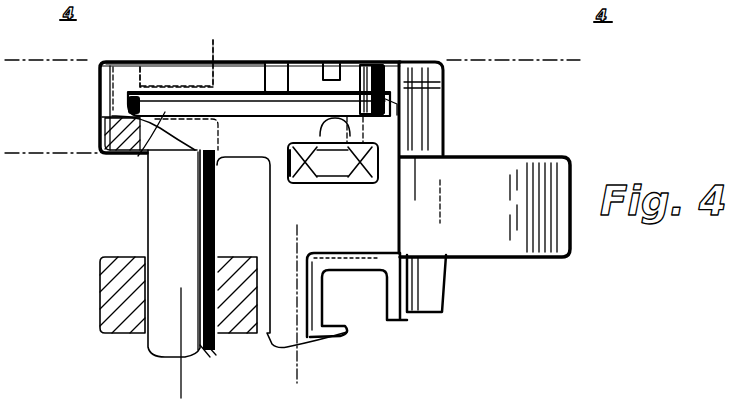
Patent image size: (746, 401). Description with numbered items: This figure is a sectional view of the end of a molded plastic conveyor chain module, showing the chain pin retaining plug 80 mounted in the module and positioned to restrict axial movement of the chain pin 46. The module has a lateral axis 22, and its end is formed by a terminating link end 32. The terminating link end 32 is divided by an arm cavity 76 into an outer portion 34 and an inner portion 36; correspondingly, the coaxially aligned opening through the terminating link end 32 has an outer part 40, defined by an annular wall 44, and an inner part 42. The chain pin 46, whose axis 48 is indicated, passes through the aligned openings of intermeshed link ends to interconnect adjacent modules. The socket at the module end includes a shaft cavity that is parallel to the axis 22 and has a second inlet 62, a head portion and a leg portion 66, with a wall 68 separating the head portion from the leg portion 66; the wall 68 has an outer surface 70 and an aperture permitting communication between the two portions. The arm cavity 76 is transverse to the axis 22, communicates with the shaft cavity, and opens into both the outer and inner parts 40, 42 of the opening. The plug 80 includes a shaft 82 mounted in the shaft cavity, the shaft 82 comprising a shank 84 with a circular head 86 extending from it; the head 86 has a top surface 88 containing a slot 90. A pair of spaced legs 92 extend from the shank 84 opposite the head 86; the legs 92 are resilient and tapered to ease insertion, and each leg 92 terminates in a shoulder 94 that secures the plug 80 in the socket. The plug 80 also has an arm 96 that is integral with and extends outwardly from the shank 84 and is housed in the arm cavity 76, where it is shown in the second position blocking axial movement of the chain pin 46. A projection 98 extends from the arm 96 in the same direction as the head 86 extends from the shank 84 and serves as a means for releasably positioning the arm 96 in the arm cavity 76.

The lateral axis 22 is at (301, 362).
The terminating link end 32 is at (100, 68).
The outer portion 34 is at (177, 60).
The inner portion 36 is at (100, 129).
The outer part 40 is at (198, 80).
The inner part 42 is at (197, 137).
The annular wall 44 is at (211, 68).
The chain pin 46 is at (152, 337).
The axis 48 is at (180, 382).
The second inlet 62 is at (322, 62).
The leg portion 66 is at (334, 186).
The wall 68 is at (290, 164).
The outer surface 70 is at (100, 103).
The arm cavity 76 is at (213, 92).
The chain pin retaining plug 80 is at (383, 58).
The shaft 82 is at (423, 84).
The shank 84 is at (456, 80).
The head 86 is at (370, 61).
The top surface 88 is at (332, 60).
The slot 90 is at (353, 61).
The legs 92 is at (345, 131).
The shoulder 94 is at (373, 169).
The arm 96 is at (138, 156).
The projection 98 is at (159, 86).